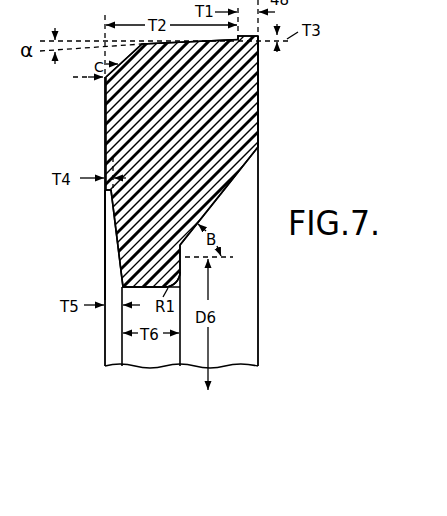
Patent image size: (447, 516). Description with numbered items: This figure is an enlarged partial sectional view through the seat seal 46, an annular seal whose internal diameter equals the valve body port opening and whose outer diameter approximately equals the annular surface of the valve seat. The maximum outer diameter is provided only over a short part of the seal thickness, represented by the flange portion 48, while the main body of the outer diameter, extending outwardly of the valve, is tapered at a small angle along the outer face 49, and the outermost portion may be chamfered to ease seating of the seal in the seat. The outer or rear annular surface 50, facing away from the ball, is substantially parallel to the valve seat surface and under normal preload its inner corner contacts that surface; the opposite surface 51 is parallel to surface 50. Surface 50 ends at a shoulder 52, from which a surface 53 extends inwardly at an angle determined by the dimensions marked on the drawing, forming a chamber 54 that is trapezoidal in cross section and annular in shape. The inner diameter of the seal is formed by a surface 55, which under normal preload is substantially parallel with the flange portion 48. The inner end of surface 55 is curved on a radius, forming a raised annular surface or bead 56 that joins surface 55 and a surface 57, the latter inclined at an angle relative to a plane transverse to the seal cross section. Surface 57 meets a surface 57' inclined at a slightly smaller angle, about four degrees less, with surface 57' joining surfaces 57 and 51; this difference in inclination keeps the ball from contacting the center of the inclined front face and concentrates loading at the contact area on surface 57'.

The seat seal 46 is at (262, 104).
The flange portion 48 is at (259, 42).
The top rake face 49 is at (187, 45).
The outer or rear annular surface 50 is at (106, 128).
The opposite surface 51 is at (256, 110).
The shoulder 52 is at (108, 193).
The surface 53 is at (117, 228).
The chamber 54 is at (108, 248).
The surface 55 is at (163, 281).
The raised annular surface or bead 56 is at (172, 274).
The surface 57 is at (213, 220).
The surface 57' is at (256, 171).